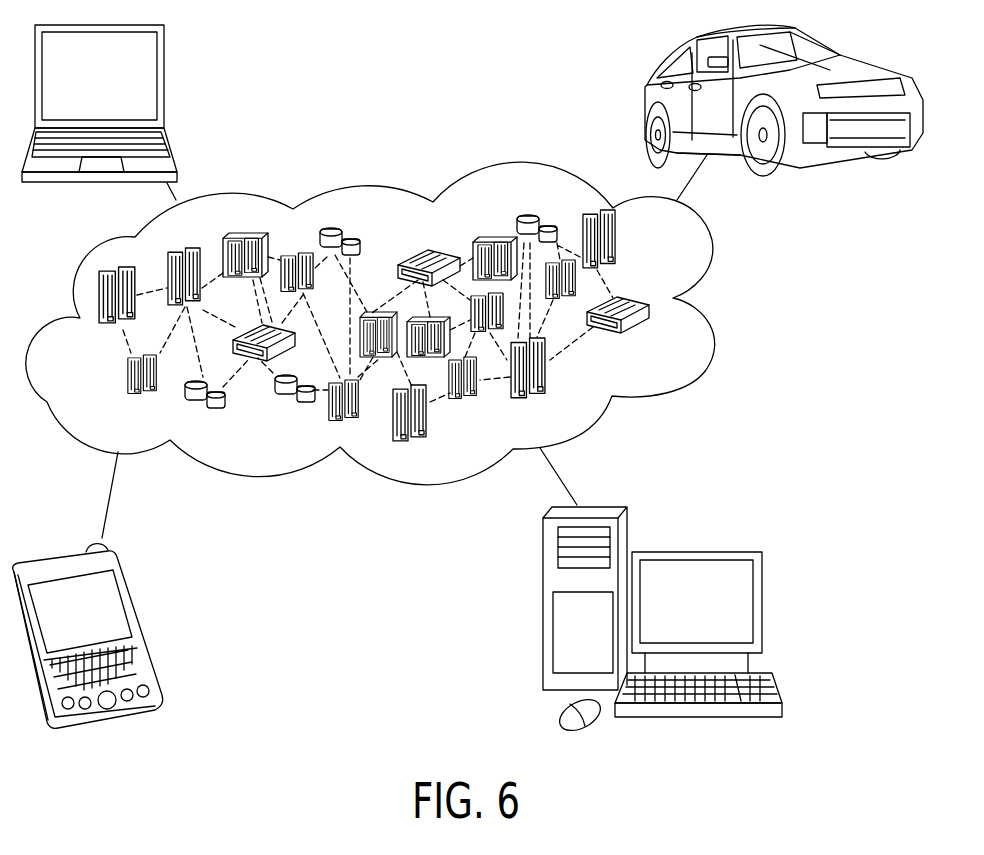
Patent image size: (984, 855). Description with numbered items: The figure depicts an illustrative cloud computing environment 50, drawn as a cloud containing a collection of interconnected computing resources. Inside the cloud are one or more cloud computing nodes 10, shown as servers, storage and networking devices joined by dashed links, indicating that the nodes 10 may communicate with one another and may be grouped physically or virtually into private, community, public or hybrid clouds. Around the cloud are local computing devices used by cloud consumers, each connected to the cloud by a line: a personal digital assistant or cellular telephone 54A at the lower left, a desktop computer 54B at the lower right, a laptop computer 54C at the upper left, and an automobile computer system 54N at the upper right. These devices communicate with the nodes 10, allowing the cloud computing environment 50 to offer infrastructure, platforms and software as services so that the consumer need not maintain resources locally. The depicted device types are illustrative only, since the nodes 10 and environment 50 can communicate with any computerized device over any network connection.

The cloud computing nodes 10 is at (468, 375).
The cloud computing environment 50 is at (712, 248).
The personal digital assistant or cellular telephone 54A is at (133, 600).
The desktop computer 54B is at (762, 600).
The laptop computer 54C is at (165, 80).
The automobile computer system 54N is at (830, 50).